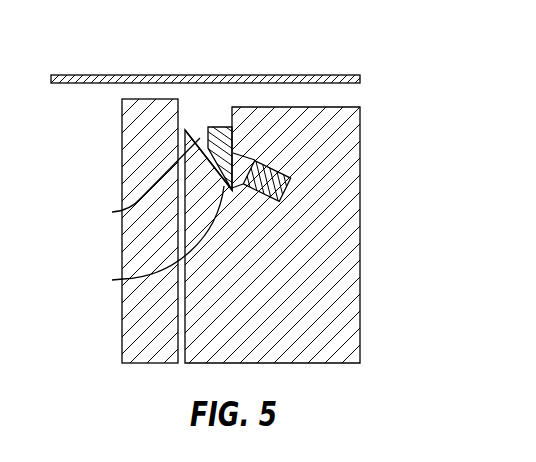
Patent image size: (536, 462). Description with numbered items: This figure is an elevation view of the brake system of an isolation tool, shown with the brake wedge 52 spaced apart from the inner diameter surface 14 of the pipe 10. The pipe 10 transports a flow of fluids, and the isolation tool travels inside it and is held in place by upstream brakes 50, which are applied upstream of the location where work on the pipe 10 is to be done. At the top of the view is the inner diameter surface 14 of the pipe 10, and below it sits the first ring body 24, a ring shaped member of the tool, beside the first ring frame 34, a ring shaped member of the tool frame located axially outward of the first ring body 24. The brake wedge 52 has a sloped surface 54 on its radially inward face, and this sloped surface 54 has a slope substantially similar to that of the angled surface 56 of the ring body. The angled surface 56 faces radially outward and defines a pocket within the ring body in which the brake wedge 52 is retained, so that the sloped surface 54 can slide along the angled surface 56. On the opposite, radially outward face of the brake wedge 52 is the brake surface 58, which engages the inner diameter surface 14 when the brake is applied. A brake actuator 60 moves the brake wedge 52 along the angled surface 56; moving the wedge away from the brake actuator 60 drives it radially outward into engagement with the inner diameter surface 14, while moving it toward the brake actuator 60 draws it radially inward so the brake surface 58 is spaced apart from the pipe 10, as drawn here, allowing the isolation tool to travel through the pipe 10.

The pipe 10 is at (313, 75).
The inner diameter surface 14 is at (100, 84).
The first ring body 24 is at (358, 233).
The first ring frame 34 is at (122, 166).
The upstream brakes 50 is at (238, 95).
The brake wedge 52 is at (139, 185).
The sloped surface 54 is at (151, 242).
The angled surface 56 is at (193, 142).
The brake surface 58 is at (216, 126).
The brake actuator 60 is at (279, 166).